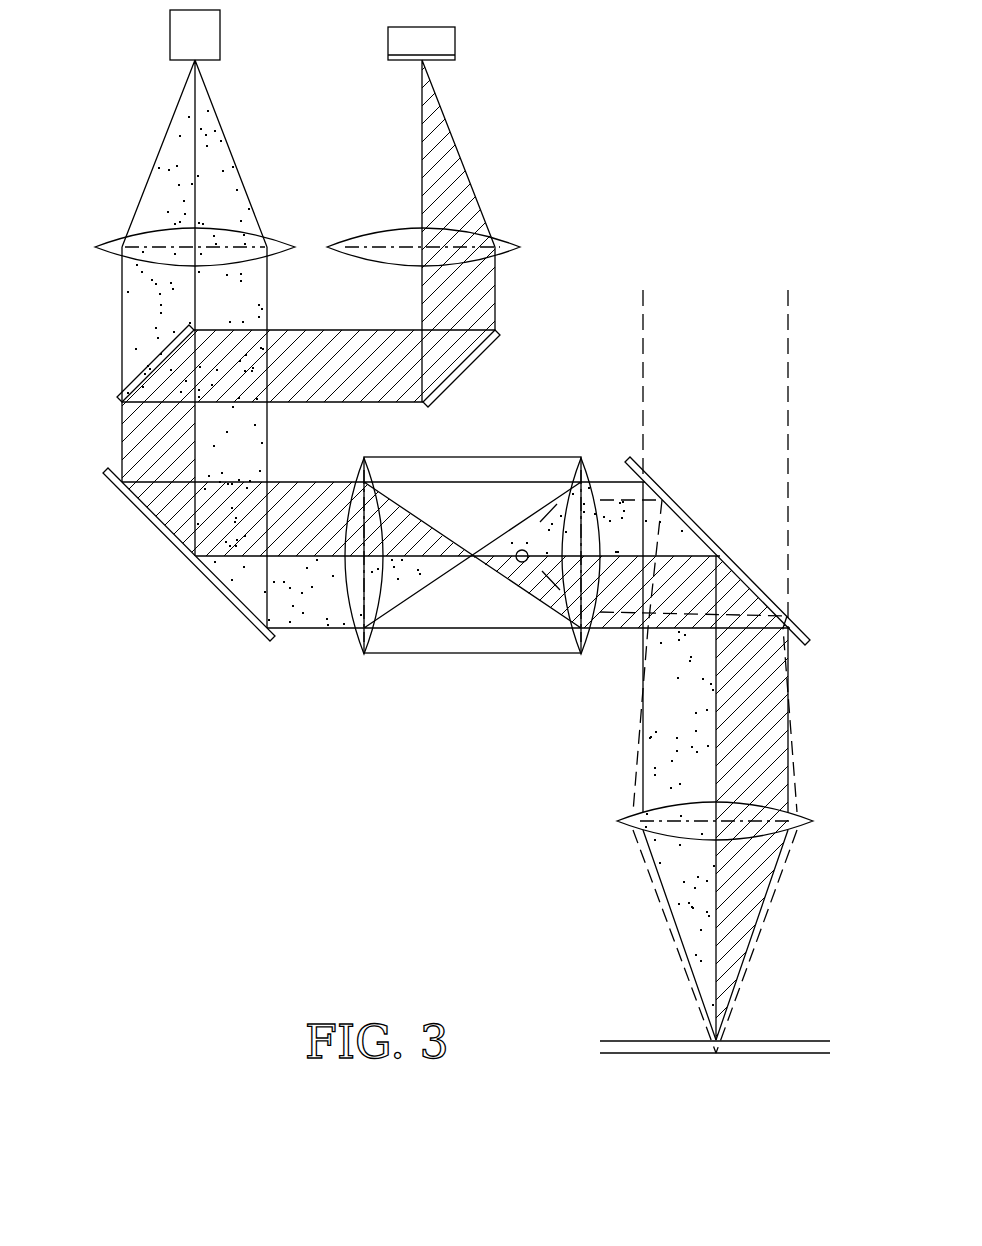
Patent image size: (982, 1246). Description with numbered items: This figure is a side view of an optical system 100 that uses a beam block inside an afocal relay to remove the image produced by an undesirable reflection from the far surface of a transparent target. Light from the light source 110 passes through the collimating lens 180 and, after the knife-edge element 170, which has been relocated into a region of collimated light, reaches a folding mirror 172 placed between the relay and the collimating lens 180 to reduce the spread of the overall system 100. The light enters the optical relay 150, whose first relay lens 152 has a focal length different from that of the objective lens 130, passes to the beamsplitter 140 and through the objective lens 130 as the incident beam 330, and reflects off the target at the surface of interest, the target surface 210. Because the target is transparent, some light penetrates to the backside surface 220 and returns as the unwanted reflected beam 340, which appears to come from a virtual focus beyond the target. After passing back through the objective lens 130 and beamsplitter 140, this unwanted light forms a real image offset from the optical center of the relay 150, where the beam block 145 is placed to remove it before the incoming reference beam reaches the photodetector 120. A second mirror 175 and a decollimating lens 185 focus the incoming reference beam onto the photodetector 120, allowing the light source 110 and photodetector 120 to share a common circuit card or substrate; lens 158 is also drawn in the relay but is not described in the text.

The overall system 100 is at (344, 834).
The light source 110 is at (170, 40).
The photodetector 120 is at (455, 46).
The objective lens 130 is at (812, 820).
The beamsplitter 140 is at (682, 518).
The beam block 145 is at (510, 533).
The optical relay 150 is at (479, 676).
The first relay lens 152 is at (583, 652).
The first relay lens 158 is at (360, 648).
The knife-edge element 170 is at (116, 393).
The folding mirror 172 is at (124, 488).
The second mirror 175 is at (472, 368).
The collimating lens 180 is at (105, 251).
The decollimating lens 185 is at (519, 250).
The target surface 210 is at (778, 1040).
The backside surface 220 is at (778, 1053).
The incident beam 330 is at (673, 913).
The reflected beam 340 is at (614, 500).